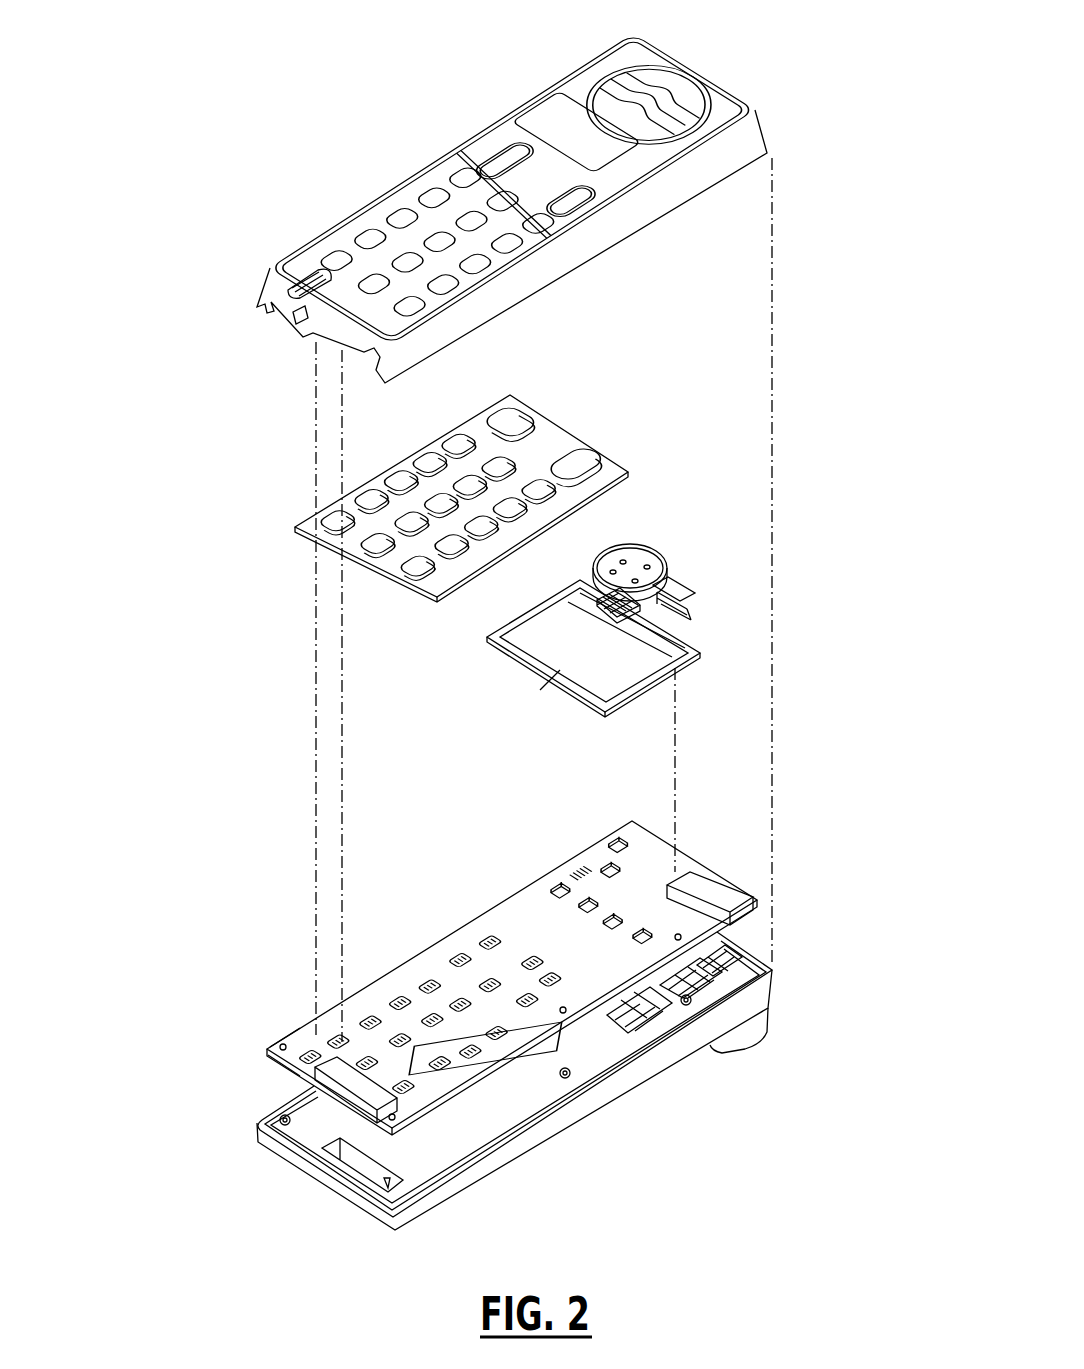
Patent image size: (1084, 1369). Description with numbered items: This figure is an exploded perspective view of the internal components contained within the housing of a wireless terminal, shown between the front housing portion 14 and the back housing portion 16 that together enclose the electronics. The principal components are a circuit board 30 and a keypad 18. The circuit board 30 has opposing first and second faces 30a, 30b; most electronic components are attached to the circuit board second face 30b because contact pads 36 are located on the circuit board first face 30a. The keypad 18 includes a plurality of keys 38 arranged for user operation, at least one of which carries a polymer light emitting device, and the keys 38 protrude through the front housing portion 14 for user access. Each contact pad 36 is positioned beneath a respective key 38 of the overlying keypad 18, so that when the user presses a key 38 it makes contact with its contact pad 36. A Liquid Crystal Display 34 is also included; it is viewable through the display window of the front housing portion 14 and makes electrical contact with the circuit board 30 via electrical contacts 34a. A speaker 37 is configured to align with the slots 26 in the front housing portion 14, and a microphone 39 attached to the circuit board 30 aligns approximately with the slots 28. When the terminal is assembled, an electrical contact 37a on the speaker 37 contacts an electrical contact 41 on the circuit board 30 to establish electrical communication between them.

The front housing portion 14 is at (653, 45).
The slots 26 is at (645, 78).
The slots 28 is at (298, 265).
The keypad 18 is at (527, 400).
The keys 38 is at (505, 465).
The speaker 37 is at (667, 558).
The electrical contact 37a is at (672, 586).
The Liquid Crystal Display (LCD) 34 is at (613, 667).
The electrical contacts 34a is at (582, 872).
The circuit board 30 is at (683, 873).
The circuit board first face 30a is at (283, 1033).
The circuit board second face 30b is at (283, 1065).
The electrical contact 41 is at (687, 878).
The contact pads 36 is at (527, 1000).
The microphone 39 is at (312, 1055).
The back housing portion 16 is at (773, 988).